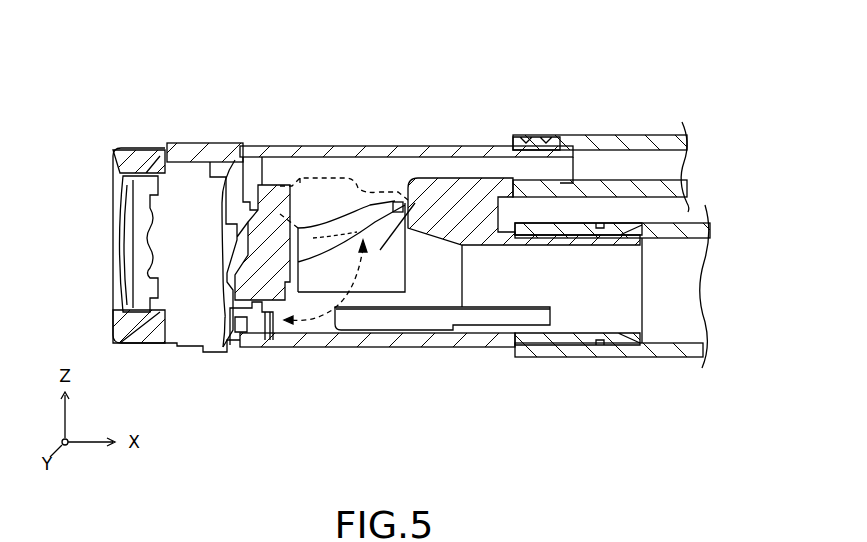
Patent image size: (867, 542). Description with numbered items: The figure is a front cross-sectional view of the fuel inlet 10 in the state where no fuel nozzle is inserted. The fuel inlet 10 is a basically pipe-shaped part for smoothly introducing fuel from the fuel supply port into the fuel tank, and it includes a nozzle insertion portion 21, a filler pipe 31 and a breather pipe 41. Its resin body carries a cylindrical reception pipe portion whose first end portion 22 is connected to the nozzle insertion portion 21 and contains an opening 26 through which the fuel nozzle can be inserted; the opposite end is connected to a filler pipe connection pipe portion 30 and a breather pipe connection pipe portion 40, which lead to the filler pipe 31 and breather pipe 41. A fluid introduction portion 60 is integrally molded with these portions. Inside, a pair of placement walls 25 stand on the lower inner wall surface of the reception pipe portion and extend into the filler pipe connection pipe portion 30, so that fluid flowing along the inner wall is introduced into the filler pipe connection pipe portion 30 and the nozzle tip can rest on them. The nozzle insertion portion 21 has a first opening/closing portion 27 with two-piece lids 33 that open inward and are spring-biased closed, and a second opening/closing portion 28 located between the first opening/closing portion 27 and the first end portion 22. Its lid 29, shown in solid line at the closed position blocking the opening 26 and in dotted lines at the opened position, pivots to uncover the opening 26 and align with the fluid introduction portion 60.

The fuel inlet 10 is at (686, 97).
The nozzle insertion portion 21 is at (223, 58).
The first end portion 22 is at (265, 143).
The placement walls 25 is at (418, 315).
The opening 26 is at (217, 255).
The first opening/closing portion 27 is at (147, 143).
The second opening/closing portion 28 is at (228, 140).
The lid 29 is at (260, 350).
The filler pipe connection pipe portion 30 is at (590, 357).
The filler pipe 31 is at (665, 357).
The two-piece lids 33 is at (140, 348).
The breather pipe connection pipe portion 40 is at (520, 137).
The breather pipe 41 is at (620, 135).
The fluid introduction portion 60 is at (408, 147).